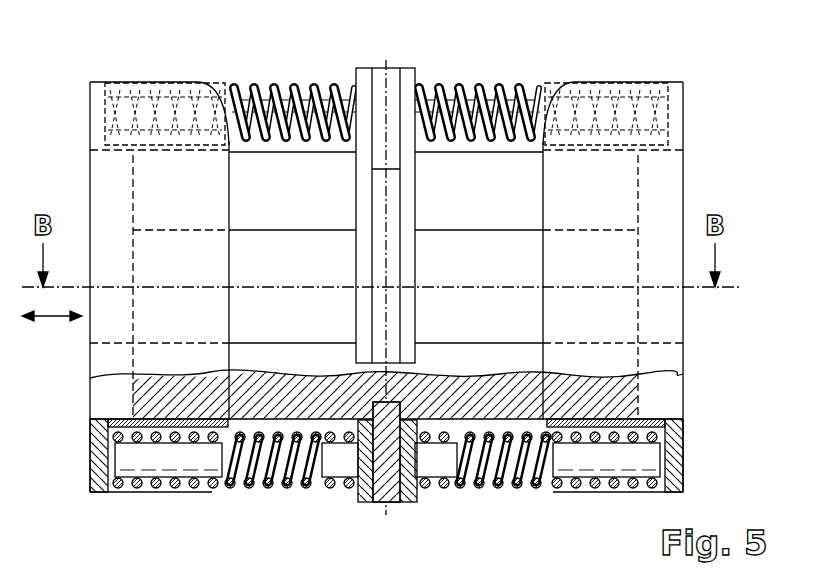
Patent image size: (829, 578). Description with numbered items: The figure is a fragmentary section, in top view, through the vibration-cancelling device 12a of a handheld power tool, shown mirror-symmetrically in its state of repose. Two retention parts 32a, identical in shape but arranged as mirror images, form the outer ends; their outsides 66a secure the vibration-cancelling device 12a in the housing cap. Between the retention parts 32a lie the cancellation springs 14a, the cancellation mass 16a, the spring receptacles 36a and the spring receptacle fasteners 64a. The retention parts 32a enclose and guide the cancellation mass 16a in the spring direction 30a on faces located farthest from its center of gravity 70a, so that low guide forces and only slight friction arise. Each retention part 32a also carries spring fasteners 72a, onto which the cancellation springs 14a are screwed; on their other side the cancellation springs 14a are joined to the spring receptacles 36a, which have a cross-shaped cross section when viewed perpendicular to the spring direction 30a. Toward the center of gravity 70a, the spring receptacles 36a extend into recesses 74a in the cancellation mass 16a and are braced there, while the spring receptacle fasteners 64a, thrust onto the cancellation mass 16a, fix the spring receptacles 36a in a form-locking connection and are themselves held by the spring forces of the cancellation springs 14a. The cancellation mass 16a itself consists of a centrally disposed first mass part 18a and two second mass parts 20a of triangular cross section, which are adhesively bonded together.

The vibration-cancelling device 12a is at (138, 72).
The cancellation spring 14a is at (266, 490).
The cancellation mass 16a is at (285, 188).
The first mass part 18a is at (525, 330).
The second mass part 20a is at (530, 200).
The spring direction 30a is at (50, 318).
The retention part 32a is at (105, 166).
The spring receptacle 36a is at (393, 502).
The spring receptacle fastener 64a is at (407, 78).
The outside 66a is at (90, 140).
The center of gravity 70a is at (386, 285).
The spring fastener 72a is at (160, 475).
The recess 74a is at (365, 502).